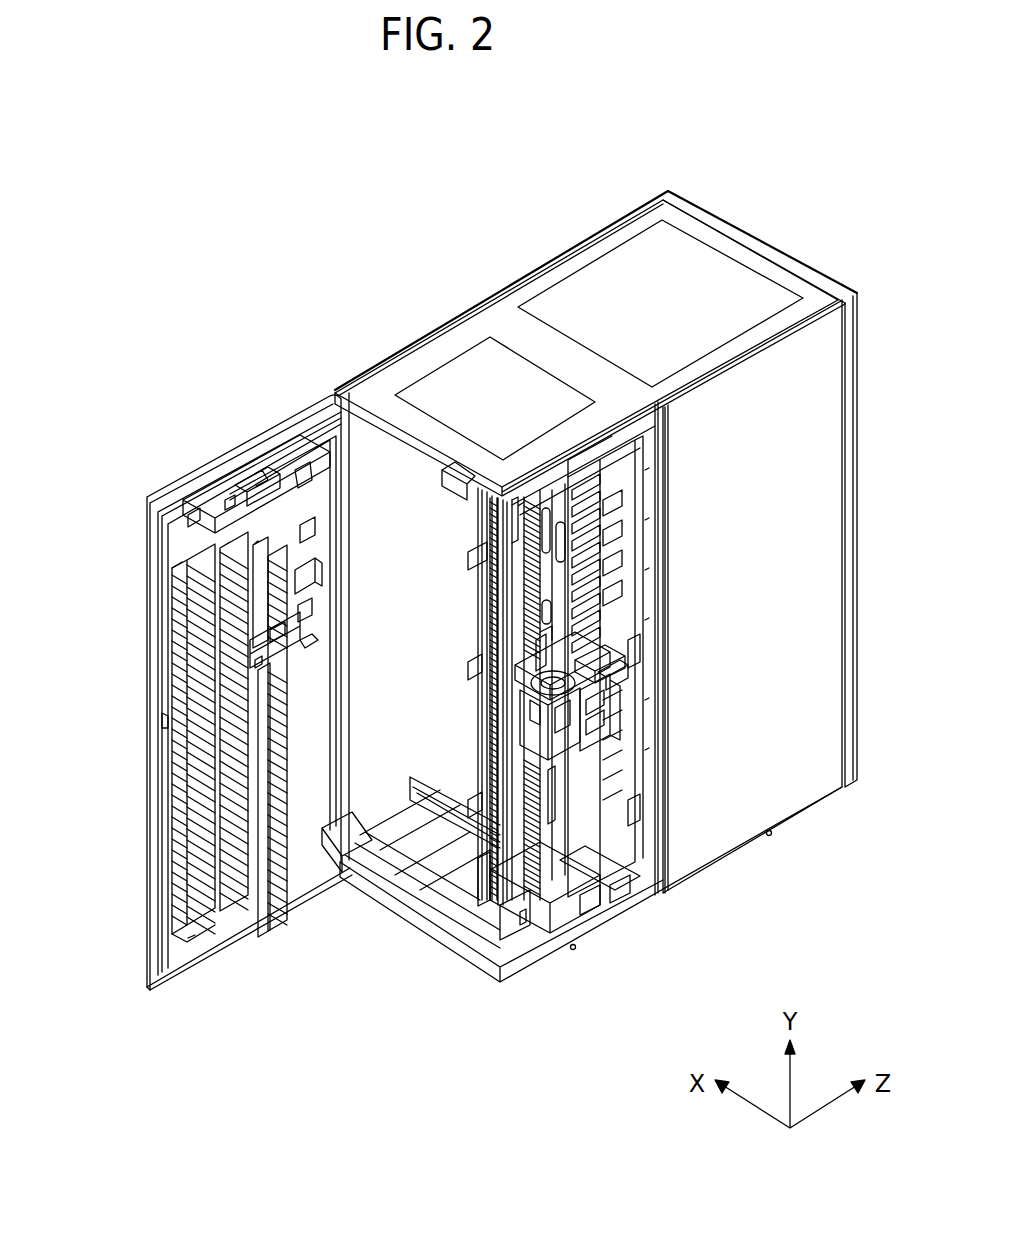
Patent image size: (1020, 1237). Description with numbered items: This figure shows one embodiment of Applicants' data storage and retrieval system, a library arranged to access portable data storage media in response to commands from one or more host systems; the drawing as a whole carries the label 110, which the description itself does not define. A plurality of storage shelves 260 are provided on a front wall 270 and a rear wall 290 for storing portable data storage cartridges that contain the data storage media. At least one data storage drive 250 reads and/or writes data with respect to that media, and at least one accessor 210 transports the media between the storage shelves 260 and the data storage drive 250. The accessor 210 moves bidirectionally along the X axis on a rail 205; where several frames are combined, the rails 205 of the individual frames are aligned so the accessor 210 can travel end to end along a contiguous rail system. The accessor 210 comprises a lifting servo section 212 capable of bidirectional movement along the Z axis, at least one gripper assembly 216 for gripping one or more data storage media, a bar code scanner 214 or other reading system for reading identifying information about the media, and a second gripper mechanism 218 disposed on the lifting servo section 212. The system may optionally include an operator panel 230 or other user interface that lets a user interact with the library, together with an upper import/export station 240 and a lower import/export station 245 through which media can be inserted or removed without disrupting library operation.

The test handler apparatus 110 is at (462, 631).
The rail 205 is at (412, 813).
The accessor 210 is at (540, 903).
The lifting servo section 212 is at (615, 650).
The bar code scanner 214 is at (515, 725).
The gripper assembly 216 is at (618, 688).
The second gripper mechanism 218 is at (618, 665).
The operator panel 230 is at (310, 508).
The upper import/export station 240 is at (295, 545).
The lower import/export station 245 is at (295, 728).
The data storage drive 250 is at (620, 495).
The storage shelves 260 is at (160, 805).
The front wall 270 is at (150, 667).
The rear wall 290 is at (478, 538).